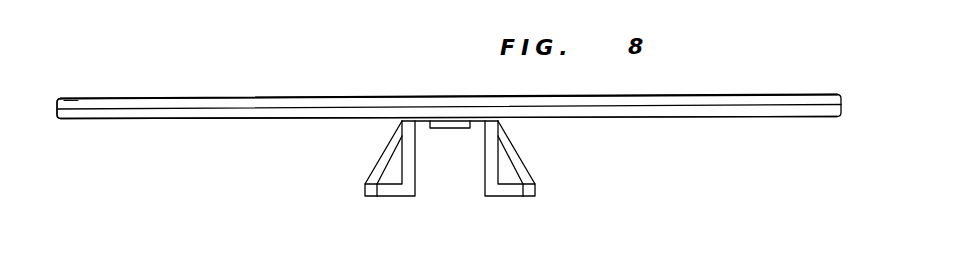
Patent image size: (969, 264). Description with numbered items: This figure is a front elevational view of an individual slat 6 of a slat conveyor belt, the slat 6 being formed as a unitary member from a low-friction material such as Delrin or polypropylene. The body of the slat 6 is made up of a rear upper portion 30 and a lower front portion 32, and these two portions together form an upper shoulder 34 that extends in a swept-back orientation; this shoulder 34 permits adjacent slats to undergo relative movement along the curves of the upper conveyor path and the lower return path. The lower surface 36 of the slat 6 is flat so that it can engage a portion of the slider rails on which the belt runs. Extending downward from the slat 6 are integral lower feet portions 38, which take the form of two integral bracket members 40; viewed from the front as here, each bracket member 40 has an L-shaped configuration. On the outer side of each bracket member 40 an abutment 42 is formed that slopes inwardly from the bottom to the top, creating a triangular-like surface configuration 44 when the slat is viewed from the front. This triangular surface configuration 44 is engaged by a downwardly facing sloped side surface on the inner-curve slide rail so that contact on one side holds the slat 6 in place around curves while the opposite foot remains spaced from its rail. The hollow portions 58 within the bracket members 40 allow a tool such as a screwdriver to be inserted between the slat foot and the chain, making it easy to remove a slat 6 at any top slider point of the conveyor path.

The slat 6 is at (400, 98).
The rear upper portion 30 is at (188, 97).
The lower front portion 32 is at (230, 118).
The upper shoulder 34 is at (348, 105).
The lower surface 36 is at (162, 122).
The lower feet portions 38 is at (408, 197).
The hollow portions 58 is at (512, 197).
The bracket members 40 is at (396, 181).
The abutment 42 is at (388, 147).
The triangular surface configuration 44 is at (397, 174).